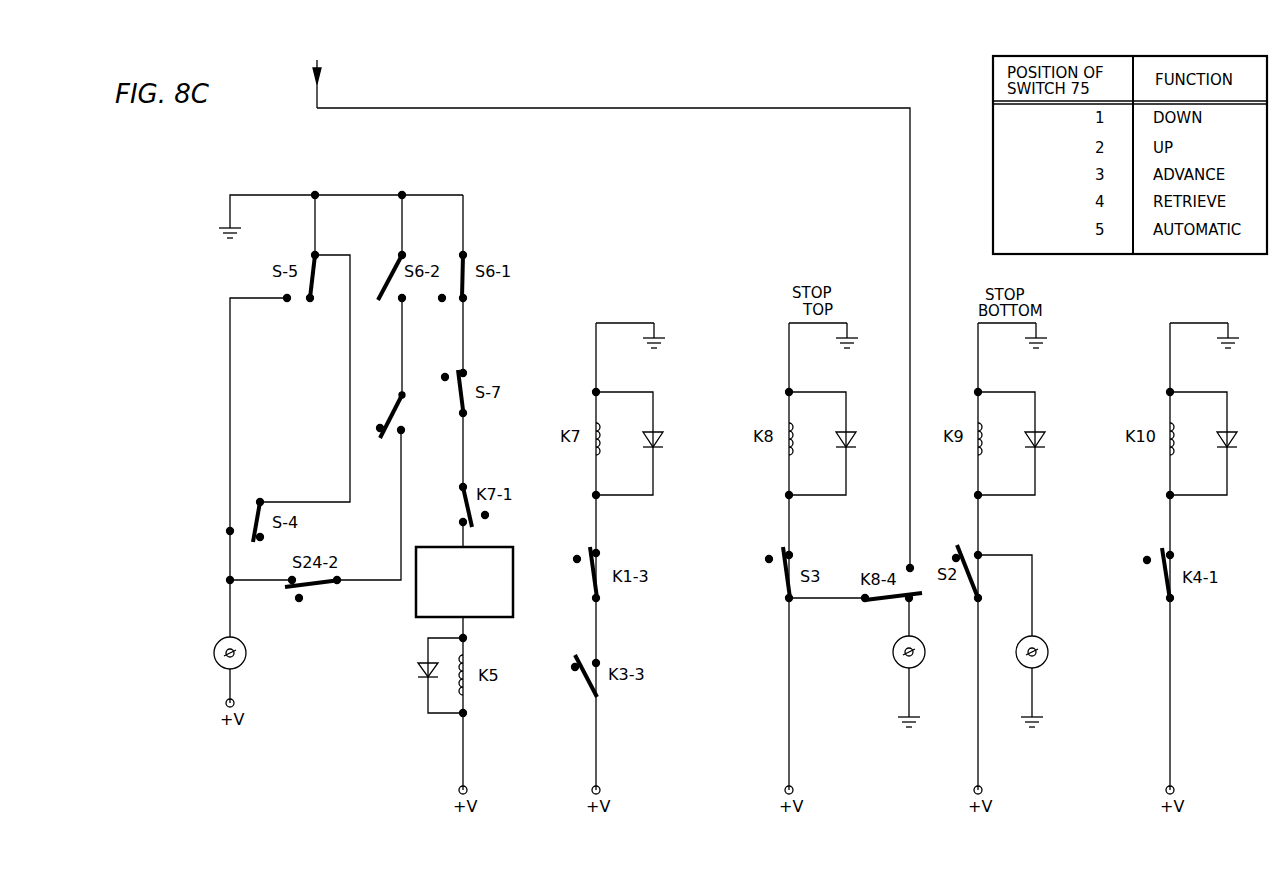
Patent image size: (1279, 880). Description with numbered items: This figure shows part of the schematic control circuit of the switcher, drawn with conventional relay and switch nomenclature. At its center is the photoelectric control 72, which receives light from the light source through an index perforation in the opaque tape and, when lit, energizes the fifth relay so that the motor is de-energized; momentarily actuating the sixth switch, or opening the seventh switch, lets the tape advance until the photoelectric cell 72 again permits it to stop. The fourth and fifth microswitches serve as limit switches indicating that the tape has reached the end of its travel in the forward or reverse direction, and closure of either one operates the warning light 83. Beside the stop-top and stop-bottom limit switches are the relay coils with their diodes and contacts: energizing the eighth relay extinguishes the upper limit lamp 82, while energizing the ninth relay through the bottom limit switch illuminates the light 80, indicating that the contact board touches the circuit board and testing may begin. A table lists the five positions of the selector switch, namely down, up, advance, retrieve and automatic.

The photoelectric cell 72 is at (515, 553).
The light 80 is at (1047, 660).
The upper limit lamp 82 is at (924, 660).
The warning light 83 is at (244, 660).